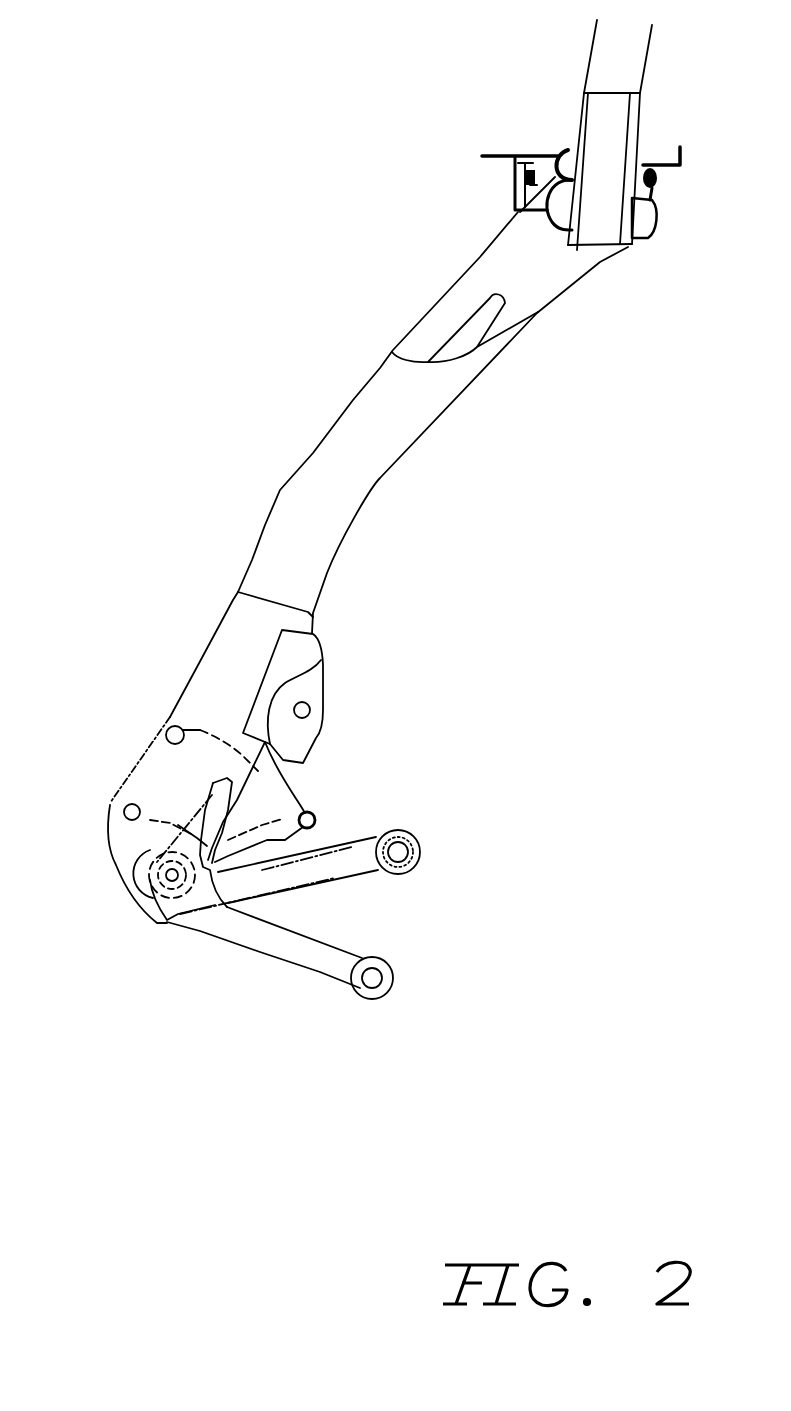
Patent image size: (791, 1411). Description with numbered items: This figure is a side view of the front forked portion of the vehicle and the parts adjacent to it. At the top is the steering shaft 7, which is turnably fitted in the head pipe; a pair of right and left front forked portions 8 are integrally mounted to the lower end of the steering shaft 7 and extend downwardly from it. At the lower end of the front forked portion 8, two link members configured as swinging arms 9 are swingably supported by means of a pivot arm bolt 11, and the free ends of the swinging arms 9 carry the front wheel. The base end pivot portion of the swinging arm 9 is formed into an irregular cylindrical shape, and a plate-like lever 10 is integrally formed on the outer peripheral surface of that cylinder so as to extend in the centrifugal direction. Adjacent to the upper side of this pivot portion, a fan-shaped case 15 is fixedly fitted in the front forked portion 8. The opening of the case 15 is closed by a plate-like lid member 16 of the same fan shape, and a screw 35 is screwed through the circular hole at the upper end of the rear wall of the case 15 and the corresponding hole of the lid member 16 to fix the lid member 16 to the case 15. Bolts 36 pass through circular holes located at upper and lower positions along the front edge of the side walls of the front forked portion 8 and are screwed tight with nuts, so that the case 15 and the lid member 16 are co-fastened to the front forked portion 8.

The steering shaft 7 is at (593, 68).
The front forked portion 8 is at (310, 453).
The swinging arm 9 is at (257, 952).
The lever 10 is at (308, 841).
The pivot arm bolt 11 is at (163, 877).
The case 15 is at (276, 778).
The lid member 16 is at (270, 795).
The screw 35 is at (315, 813).
The bolt 36 is at (168, 727).